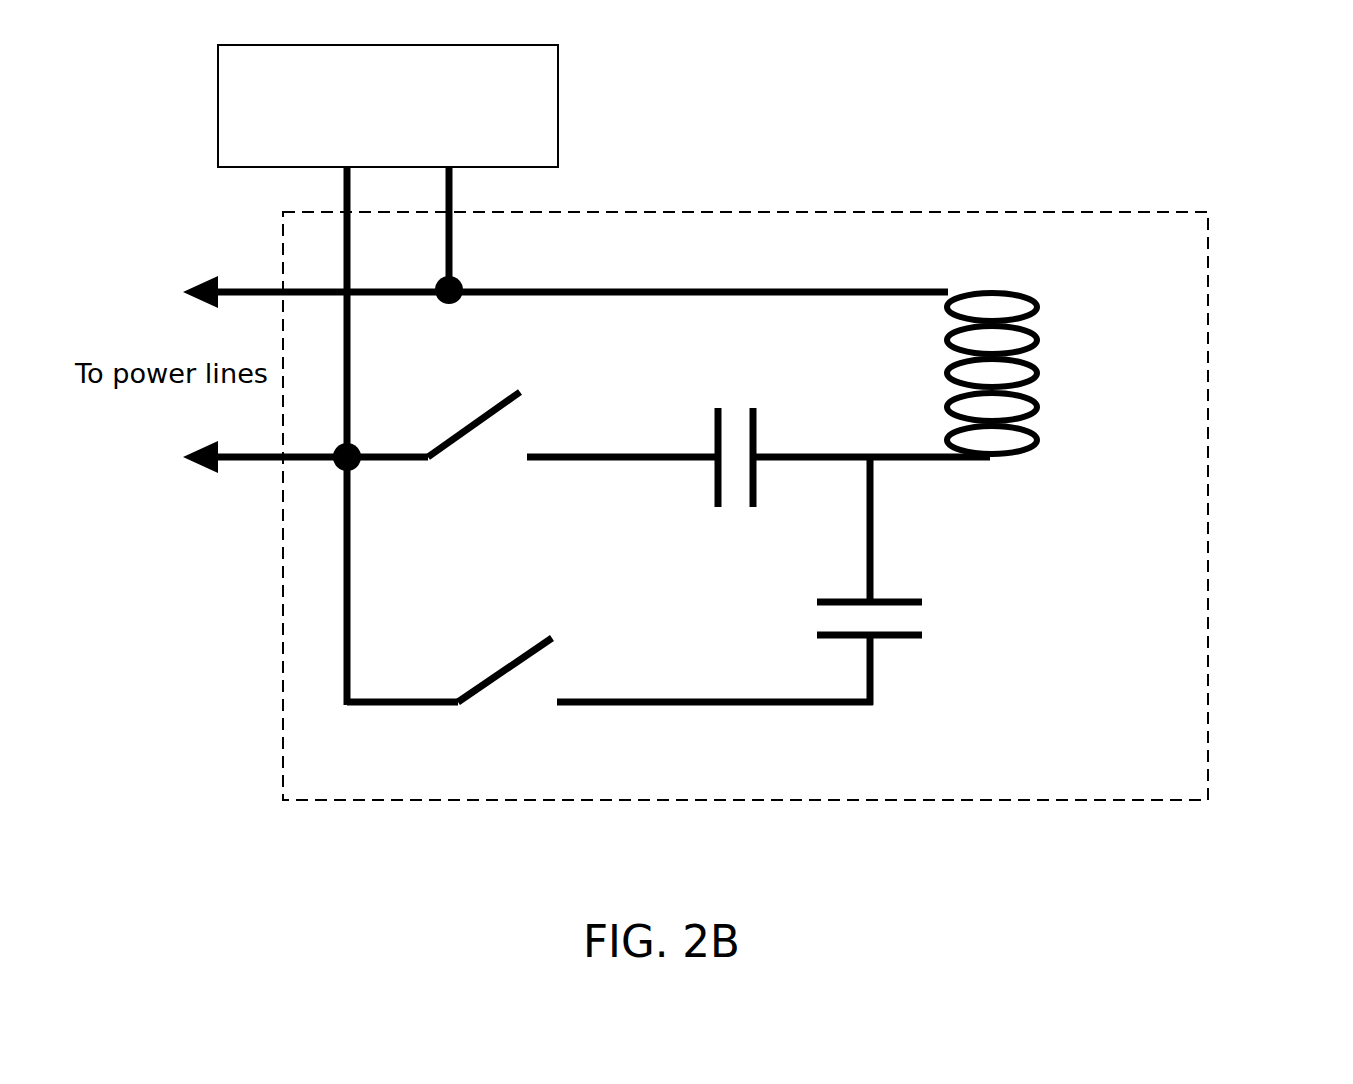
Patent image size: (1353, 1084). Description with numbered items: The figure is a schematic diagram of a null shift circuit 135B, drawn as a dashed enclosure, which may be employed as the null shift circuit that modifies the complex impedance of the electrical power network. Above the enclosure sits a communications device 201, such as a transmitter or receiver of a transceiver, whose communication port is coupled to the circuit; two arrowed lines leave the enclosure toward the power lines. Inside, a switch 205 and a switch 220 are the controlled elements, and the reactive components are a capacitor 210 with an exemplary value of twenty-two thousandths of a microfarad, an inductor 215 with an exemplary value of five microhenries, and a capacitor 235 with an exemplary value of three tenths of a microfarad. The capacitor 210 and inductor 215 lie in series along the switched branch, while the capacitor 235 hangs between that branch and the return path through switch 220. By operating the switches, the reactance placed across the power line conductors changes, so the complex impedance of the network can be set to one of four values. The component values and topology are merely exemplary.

The communications device 201 is at (542, 129).
The null shift circuit 135B is at (1192, 292).
The switch 205 is at (487, 412).
The capacitor 210 is at (738, 470).
The inductor 215 is at (1023, 348).
The switch 220 is at (508, 663).
The capacitor 235 is at (882, 620).